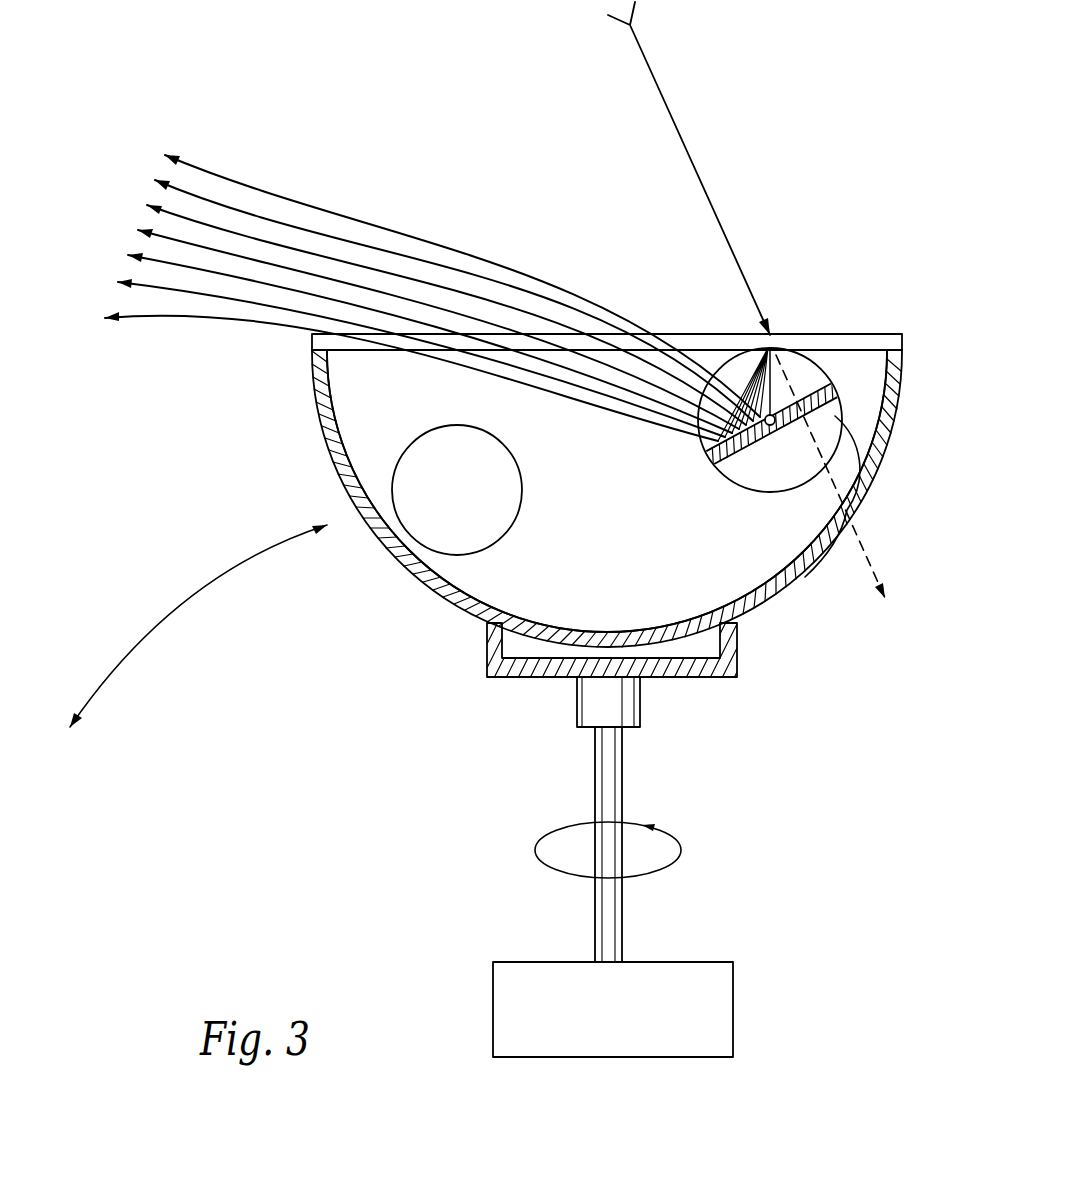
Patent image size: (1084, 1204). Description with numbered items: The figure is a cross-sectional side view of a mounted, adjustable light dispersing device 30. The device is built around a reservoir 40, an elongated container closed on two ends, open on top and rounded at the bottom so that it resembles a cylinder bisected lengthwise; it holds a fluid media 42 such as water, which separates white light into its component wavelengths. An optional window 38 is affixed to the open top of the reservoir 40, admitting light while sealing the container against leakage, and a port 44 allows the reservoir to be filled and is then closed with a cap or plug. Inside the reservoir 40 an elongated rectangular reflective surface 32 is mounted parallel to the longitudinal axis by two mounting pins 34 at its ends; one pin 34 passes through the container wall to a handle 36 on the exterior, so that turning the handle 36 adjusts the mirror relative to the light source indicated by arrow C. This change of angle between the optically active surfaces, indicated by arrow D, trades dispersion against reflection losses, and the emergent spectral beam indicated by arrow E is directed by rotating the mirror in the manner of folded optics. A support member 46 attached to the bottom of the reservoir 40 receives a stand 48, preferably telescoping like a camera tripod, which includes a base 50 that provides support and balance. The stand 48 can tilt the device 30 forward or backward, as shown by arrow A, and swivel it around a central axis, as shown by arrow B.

The light dispersing device 30 is at (403, 80).
The reflective surface 32 is at (797, 420).
The mounting pins 34 is at (797, 420).
The handle 36 is at (857, 520).
The window 38 is at (842, 333).
The reservoir 40 is at (888, 425).
The fluid media 42 is at (352, 427).
The port 44 is at (412, 538).
The support member 46 is at (598, 677).
The stand 48 is at (595, 890).
The base 50 is at (493, 1017).
The arrow A is at (198, 626).
The arrow B is at (618, 853).
The arrow C is at (689, 221).
The arrow D is at (829, 476).
The arrow E is at (432, 298).